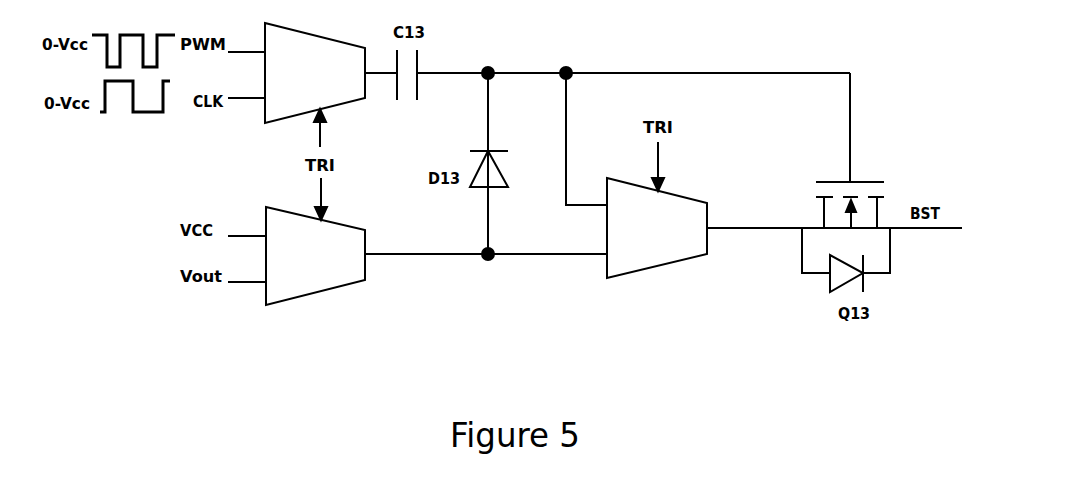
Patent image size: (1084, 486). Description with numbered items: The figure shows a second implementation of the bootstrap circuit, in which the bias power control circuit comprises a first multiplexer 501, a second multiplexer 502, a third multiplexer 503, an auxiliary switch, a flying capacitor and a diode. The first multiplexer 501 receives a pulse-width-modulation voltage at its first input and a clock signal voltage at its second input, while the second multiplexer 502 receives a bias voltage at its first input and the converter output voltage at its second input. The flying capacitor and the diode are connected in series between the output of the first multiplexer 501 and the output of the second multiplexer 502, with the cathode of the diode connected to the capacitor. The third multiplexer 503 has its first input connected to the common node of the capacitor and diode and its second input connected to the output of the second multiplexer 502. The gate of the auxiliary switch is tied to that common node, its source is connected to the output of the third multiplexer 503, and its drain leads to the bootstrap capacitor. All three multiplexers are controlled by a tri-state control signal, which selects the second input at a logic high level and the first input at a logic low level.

The first multiplexer 501 is at (327, 97).
The second multiplexer 502 is at (330, 278).
The third multiplexer 503 is at (673, 247).